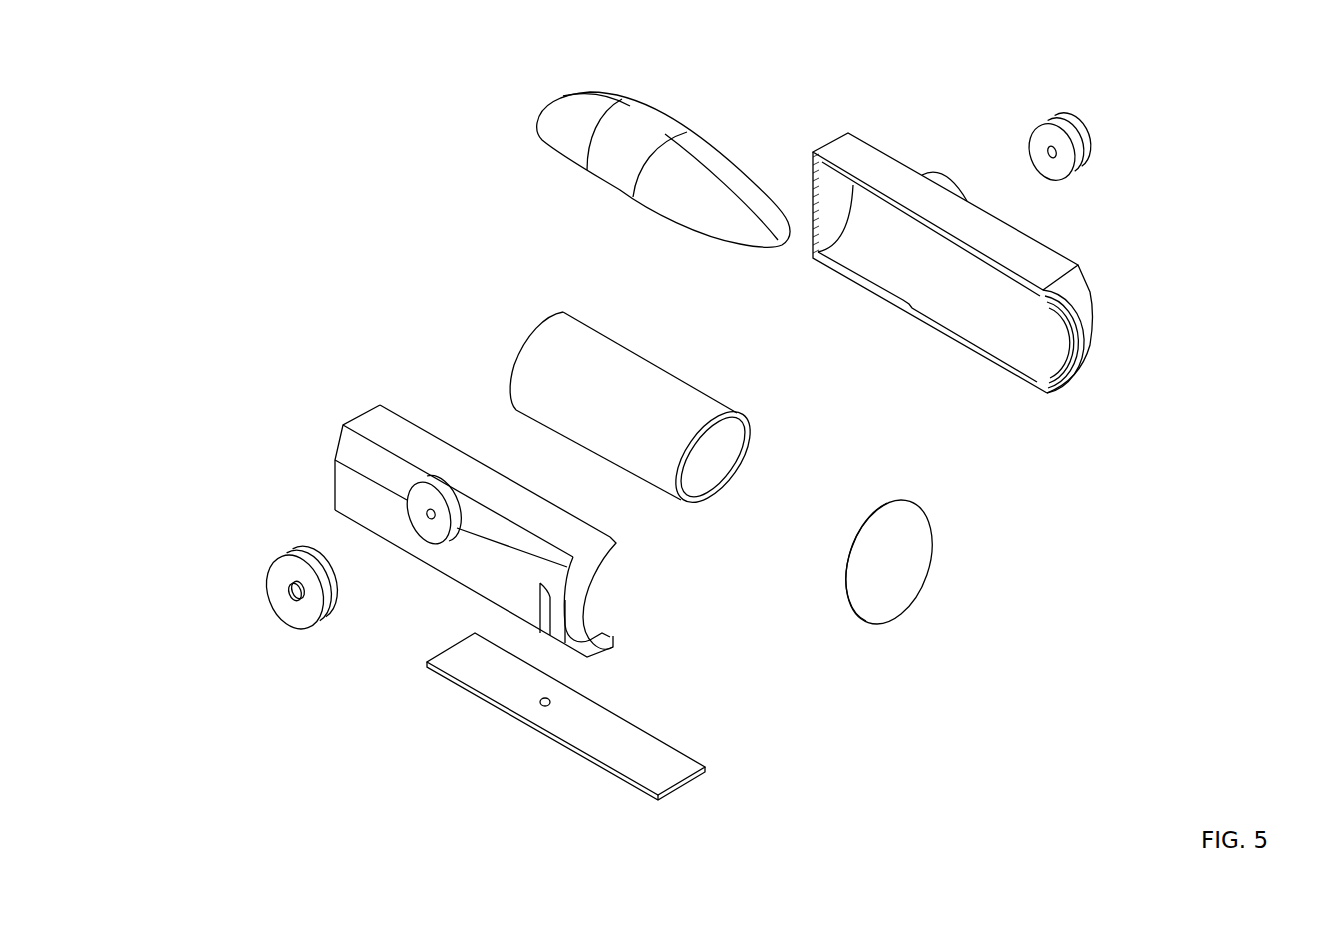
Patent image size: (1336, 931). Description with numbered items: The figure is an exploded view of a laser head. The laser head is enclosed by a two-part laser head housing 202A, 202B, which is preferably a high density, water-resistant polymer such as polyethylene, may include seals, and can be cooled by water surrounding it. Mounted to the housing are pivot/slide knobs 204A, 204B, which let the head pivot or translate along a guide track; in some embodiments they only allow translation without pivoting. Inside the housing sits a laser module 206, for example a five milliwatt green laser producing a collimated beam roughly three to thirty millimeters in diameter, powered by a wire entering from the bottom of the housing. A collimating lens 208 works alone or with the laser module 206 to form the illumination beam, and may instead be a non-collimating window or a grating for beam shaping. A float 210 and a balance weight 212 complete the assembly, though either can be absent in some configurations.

The laser head housing 202A is at (1080, 350).
The laser head housing 202B is at (370, 428).
The pivot/slide knob 204A is at (1087, 128).
The pivot/slide knob 204B is at (285, 580).
The laser module 206 is at (537, 347).
The collimating lens 208 is at (923, 555).
The float 210 is at (552, 130).
The balance weight 212 is at (570, 727).